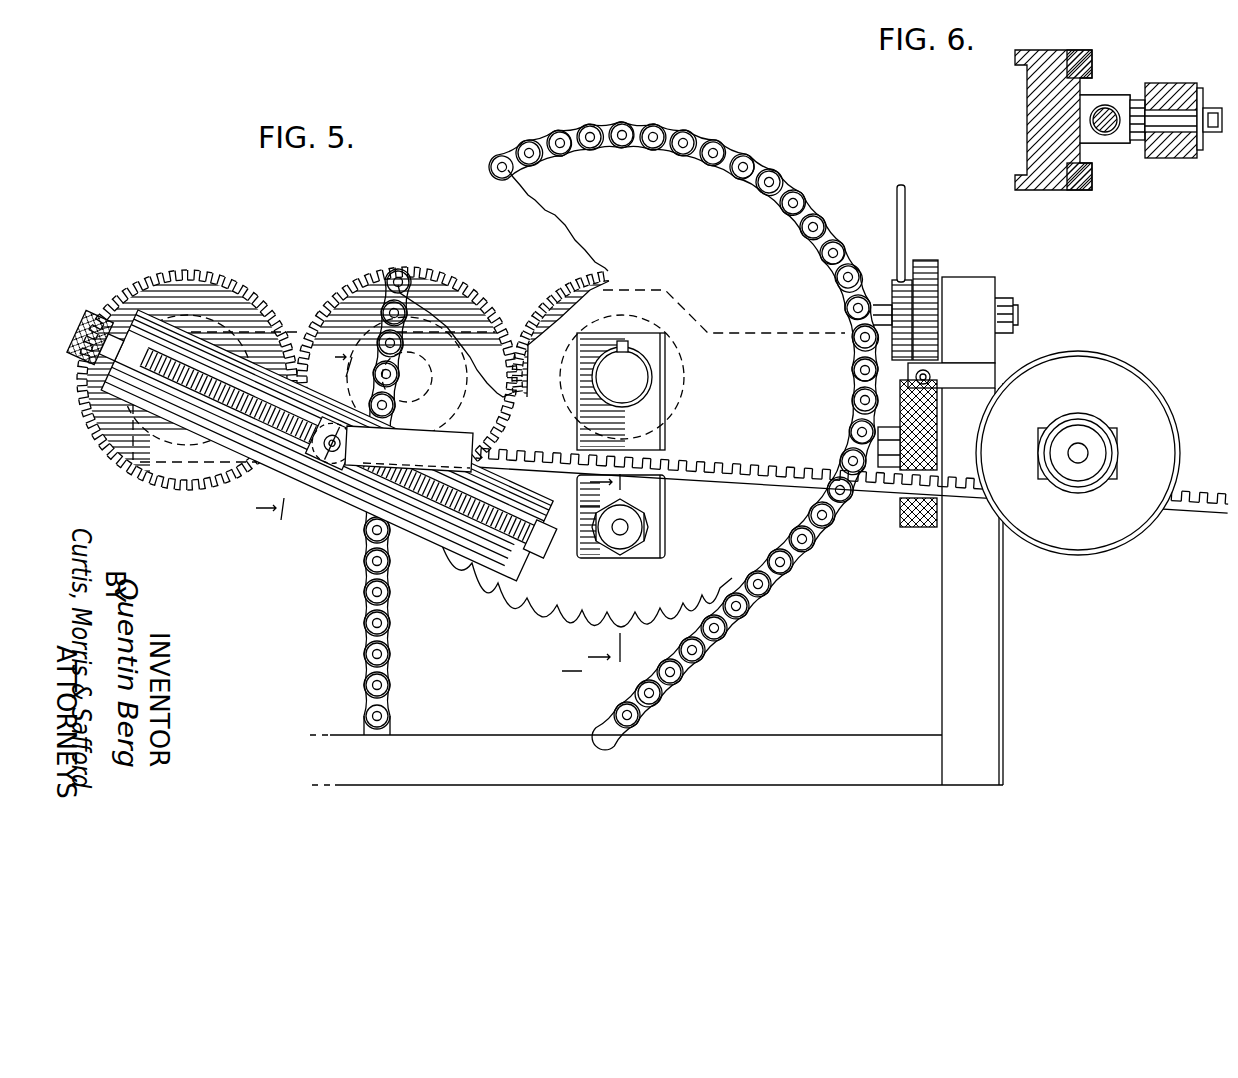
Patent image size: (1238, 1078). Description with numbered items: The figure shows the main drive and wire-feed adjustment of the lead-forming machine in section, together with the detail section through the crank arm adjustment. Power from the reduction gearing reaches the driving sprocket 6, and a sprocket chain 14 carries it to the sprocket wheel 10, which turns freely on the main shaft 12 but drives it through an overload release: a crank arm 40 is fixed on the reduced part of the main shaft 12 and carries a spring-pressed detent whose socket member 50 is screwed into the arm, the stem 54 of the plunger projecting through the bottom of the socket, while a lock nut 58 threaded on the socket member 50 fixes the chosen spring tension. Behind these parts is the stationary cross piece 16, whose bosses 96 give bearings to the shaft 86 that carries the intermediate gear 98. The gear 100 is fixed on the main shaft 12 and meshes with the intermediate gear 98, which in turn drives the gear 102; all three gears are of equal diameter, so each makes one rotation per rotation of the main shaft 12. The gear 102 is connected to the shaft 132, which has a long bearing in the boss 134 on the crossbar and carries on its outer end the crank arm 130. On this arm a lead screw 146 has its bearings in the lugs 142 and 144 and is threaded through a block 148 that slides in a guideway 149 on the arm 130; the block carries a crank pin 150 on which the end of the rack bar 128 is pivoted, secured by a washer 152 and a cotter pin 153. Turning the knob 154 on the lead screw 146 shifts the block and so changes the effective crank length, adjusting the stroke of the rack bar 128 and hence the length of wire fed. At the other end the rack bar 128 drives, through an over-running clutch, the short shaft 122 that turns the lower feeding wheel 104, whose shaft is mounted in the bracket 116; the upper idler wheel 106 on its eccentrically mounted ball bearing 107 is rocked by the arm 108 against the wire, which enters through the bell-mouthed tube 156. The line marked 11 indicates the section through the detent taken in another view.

In FIG. 5, the driving sprocket 6 is at (294, 427).
In FIG. 5, the sprocket wheel 10 is at (568, 213).
In FIG. 5, the section line 11- 11 is at (591, 573).
In FIG. 5, the main shaft 12 is at (640, 372).
In FIG. 5, the sprocket chain 14 is at (484, 168).
In FIG. 5, the stationary cross piece 16 is at (784, 342).
In FIG. 5, the crank arm 40 is at (598, 420).
In FIG. 5, the socket member 50 is at (638, 521).
In FIG. 5, the stem 54 is at (621, 526).
In FIG. 5, the lock nut 58 is at (655, 546).
In FIG. 5, the shaft 86 is at (452, 387).
In FIG. 5, the bosses 96 is at (456, 340).
In FIG. 5, the intermediate gear 98 is at (356, 307).
In FIG. 5, the gear 100 is at (553, 298).
In FIG. 5, the gear 102 is at (172, 275).
In FIG. 5, the lower feeding wheel 104 is at (912, 523).
In FIG. 5, the upper idler or presser wheel 106 is at (930, 277).
In FIG. 5, the eccentrically mounted ball bearing 107 is at (898, 300).
In FIG. 5, the arm 108 is at (904, 210).
In FIG. 5, the bracket 116 is at (985, 373).
In FIG. 5, the short shaft 122 is at (1088, 453).
In FIG. 5, the rack bar 128 is at (503, 458).
In FIG. 6, the rack bar 128 is at (1161, 97).
In FIG. 5, the crank arm 130 is at (222, 444).
In FIG. 6, the crank arm 130 is at (1044, 114).
In FIG. 5, the shaft 132 is at (226, 352).
In FIG. 5, the boss 134 is at (214, 328).
In FIG. 5, the lug 142 is at (122, 330).
In FIG. 5, the lug 144 is at (549, 541).
In FIG. 5, the lead screw 146 is at (417, 513).
In FIG. 6, the lead screw 146 is at (1107, 135).
In FIG. 5, the block 148 is at (388, 452).
In FIG. 6, the block 148 is at (1108, 100).
In FIG. 6, the guideway 149 is at (1074, 77).
In FIG. 5, the crank pin 150 is at (322, 458).
In FIG. 6, the crank pin 150 is at (1173, 125).
In FIG. 5, the washer 152 is at (332, 467).
In FIG. 6, the washer 152 is at (1200, 90).
In FIG. 5, the cotter pin 153 is at (318, 462).
In FIG. 6, the cotter pin 153 is at (1206, 135).
In FIG. 5, the knob 154 is at (88, 330).
In FIG. 5, the tube 156 is at (932, 380).